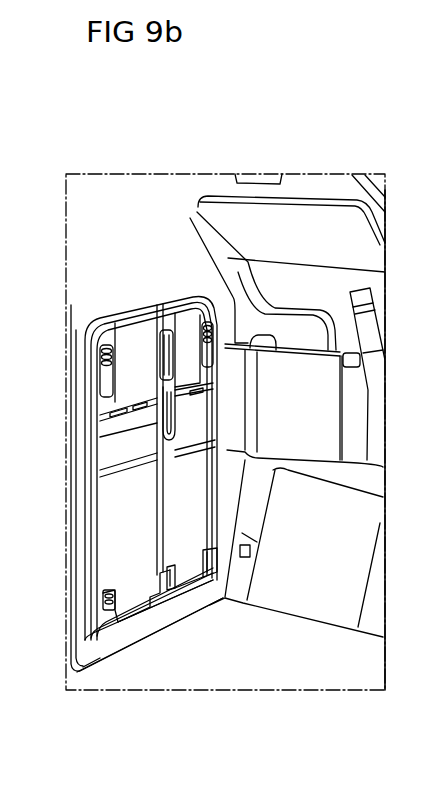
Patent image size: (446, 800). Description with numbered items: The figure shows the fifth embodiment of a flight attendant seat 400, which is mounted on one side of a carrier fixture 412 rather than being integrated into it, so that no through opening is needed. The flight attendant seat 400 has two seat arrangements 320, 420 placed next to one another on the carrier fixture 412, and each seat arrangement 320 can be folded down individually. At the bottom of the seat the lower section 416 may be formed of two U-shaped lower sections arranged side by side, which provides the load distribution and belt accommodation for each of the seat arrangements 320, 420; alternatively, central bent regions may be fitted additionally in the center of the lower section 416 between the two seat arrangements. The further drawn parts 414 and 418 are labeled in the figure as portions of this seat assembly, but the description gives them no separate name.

The flight attendant seat 400 is at (114, 309).
The carrier fixture 412 is at (100, 183).
The seat arrangement 420 is at (174, 312).
The inner trim panel 418 is at (92, 520).
The seat arrangement 320 is at (124, 537).
The panel lower edge 414 is at (93, 632).
The lower section 416 is at (211, 608).